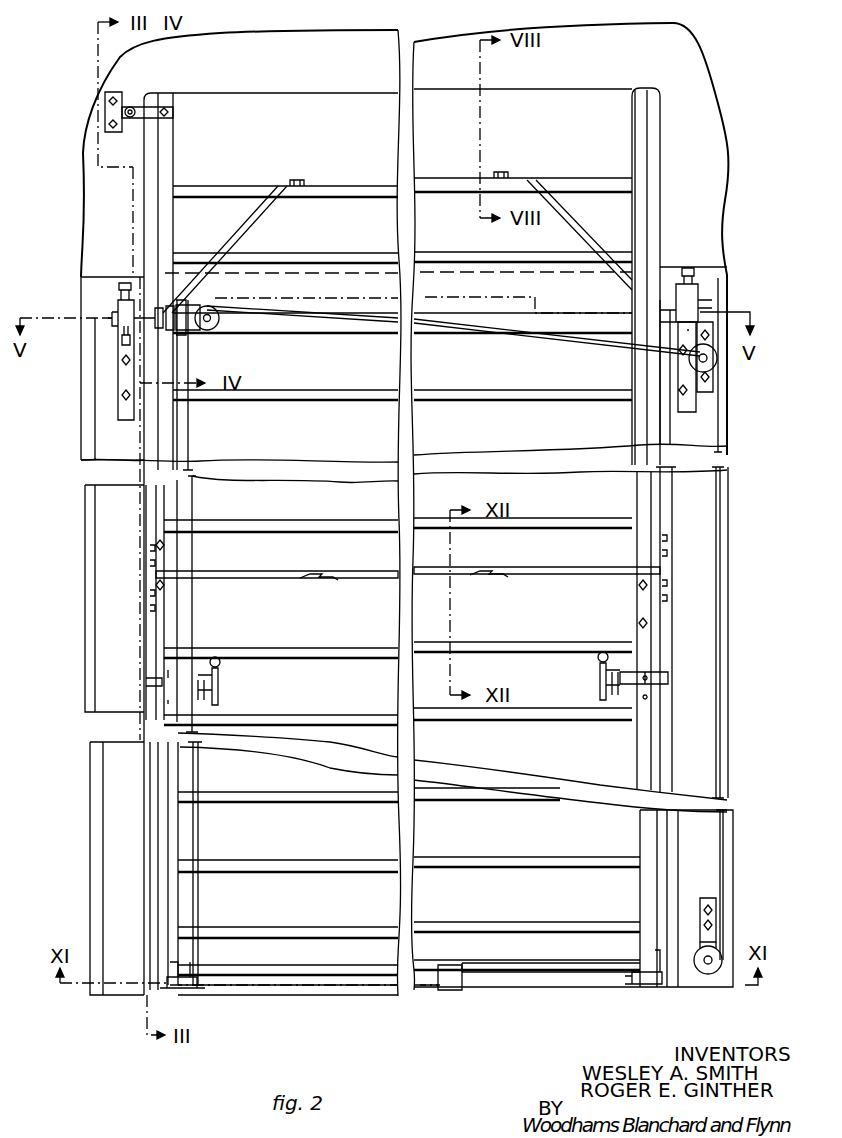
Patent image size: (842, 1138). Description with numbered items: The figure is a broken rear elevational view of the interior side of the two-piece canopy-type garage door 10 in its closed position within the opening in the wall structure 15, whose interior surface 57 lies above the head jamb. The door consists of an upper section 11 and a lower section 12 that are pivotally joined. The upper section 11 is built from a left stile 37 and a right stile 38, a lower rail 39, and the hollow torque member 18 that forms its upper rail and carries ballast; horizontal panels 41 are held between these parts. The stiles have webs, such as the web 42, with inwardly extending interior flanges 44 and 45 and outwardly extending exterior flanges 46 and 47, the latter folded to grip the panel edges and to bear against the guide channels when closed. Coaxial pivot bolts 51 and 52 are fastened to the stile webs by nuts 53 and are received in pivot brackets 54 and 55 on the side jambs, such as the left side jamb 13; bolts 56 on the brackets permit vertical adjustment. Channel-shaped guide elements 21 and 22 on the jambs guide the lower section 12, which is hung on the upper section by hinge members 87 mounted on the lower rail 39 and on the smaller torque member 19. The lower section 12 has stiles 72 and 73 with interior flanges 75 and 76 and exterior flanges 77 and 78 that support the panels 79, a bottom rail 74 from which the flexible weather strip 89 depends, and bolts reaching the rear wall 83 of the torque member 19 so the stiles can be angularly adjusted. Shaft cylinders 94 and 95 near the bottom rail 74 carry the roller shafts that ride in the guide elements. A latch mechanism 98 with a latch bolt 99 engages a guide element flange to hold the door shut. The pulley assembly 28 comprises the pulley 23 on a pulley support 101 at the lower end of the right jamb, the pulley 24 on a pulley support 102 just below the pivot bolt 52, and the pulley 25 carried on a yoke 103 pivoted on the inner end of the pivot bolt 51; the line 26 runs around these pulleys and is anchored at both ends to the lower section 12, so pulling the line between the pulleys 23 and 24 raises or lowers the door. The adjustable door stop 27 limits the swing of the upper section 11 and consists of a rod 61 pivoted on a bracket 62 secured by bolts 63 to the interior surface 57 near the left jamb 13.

The garage door 10 is at (140, 526).
The upper section 11 is at (650, 156).
The lower section 12 is at (157, 803).
The side jamb 13 is at (92, 577).
The wall structure 15 is at (688, 95).
The torque member 18 is at (350, 168).
The torque member 19 is at (560, 616).
The guide element 21 is at (150, 641).
The guide element 22 is at (667, 656).
The pulley 23 is at (718, 968).
The pulley 24 is at (718, 350).
The pulley 25 is at (217, 328).
The line 26 is at (720, 570).
The door stop 27 is at (180, 118).
The pulley assembly 28 is at (728, 718).
The stile 37 is at (160, 213).
The stile 38 is at (645, 186).
The lower rail 39 is at (275, 570).
The panels 41 is at (528, 352).
The web 42 is at (190, 262).
The flange 44 is at (166, 162).
The flange 45 is at (632, 138).
The flange 46 is at (160, 428).
The flange 47 is at (650, 420).
The pivot bolt 51 is at (115, 322).
The pivot bolt 52 is at (700, 302).
The nuts 53 is at (177, 330).
The pivot bracket 54 is at (125, 385).
The pivot bracket 55 is at (685, 410).
The bolts 56 is at (116, 291).
The interior surface 57 is at (622, 57).
The rod 61 is at (125, 113).
The bracket 62 is at (112, 104).
The bolts 63 is at (113, 124).
The stile 72 is at (168, 845).
The stile 73 is at (650, 862).
The bottom rail 74 is at (495, 968).
The interior flange 75 is at (175, 766).
The interior flange 76 is at (646, 714).
The exterior flange 77 is at (162, 905).
The exterior flange 78 is at (657, 762).
The panels 79 is at (348, 826).
The rear wall 83 is at (343, 608).
The hinge members 87 is at (492, 574).
The weather strip 89 is at (455, 990).
The shaft cylinder 94 is at (183, 988).
The shaft cylinder 95 is at (645, 984).
The latch mechanism 98 is at (224, 682).
The latch bolt 99 is at (668, 677).
The pulley support 101 is at (712, 922).
The pulley support 102 is at (708, 392).
The yoke 103 is at (203, 308).